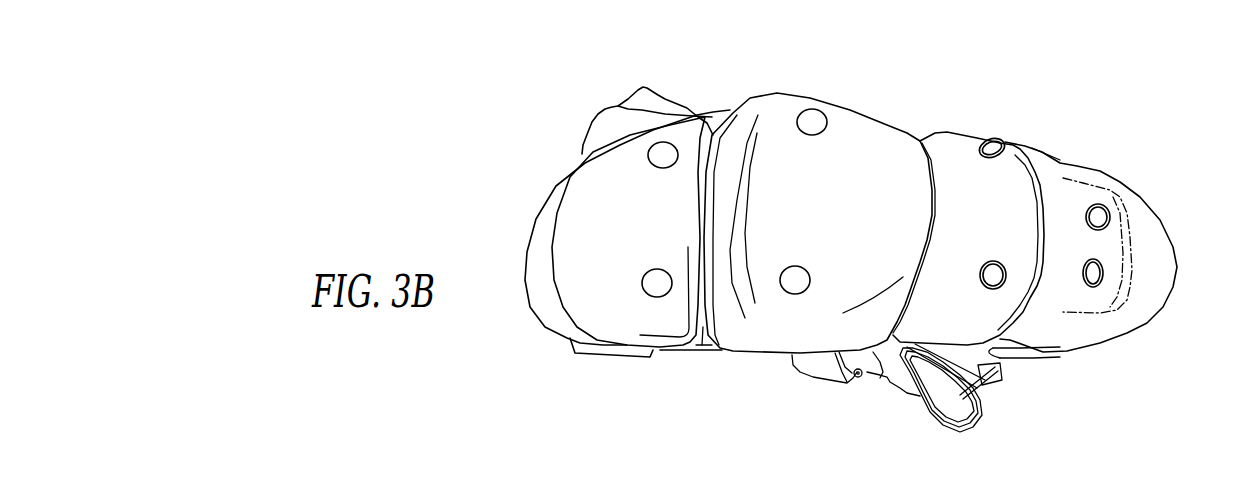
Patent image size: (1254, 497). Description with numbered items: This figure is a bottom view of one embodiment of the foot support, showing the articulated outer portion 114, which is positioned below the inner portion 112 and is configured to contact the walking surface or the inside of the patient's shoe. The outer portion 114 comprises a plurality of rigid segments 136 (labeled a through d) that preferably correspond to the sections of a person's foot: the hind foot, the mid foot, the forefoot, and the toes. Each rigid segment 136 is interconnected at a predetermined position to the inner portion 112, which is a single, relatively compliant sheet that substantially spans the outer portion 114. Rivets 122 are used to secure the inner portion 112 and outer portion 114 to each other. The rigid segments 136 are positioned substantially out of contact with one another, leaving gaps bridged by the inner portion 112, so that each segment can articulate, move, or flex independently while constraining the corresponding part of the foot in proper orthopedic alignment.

The outer portion 114 is at (1147, 158).
The rigid segments 136 is at (1057, 172).
The inner portion 112 is at (702, 345).
The rivets 122 is at (1097, 273).